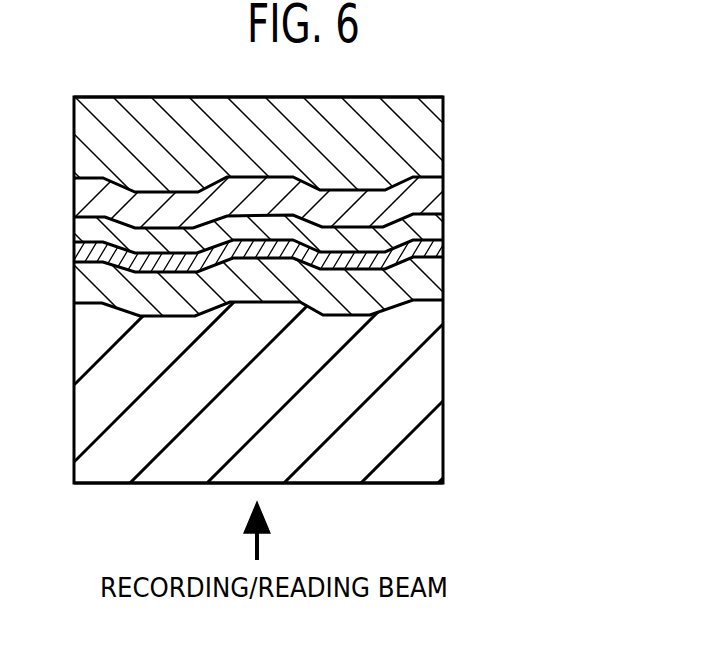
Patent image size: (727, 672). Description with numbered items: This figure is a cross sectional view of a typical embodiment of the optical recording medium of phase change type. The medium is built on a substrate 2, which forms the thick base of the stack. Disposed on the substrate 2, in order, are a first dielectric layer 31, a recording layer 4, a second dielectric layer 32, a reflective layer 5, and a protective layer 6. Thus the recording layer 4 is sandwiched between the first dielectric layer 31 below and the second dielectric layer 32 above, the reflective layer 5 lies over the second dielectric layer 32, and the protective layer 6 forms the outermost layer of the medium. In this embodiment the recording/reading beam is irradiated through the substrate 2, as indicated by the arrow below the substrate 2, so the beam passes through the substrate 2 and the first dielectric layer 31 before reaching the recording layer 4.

The protective layer 6 is at (443, 136).
The reflective layer 5 is at (443, 202).
The second dielectric layer 32 is at (443, 225).
The recording layer 4 is at (443, 243).
The first dielectric layer 31 is at (443, 278).
The substrate 2 is at (443, 385).